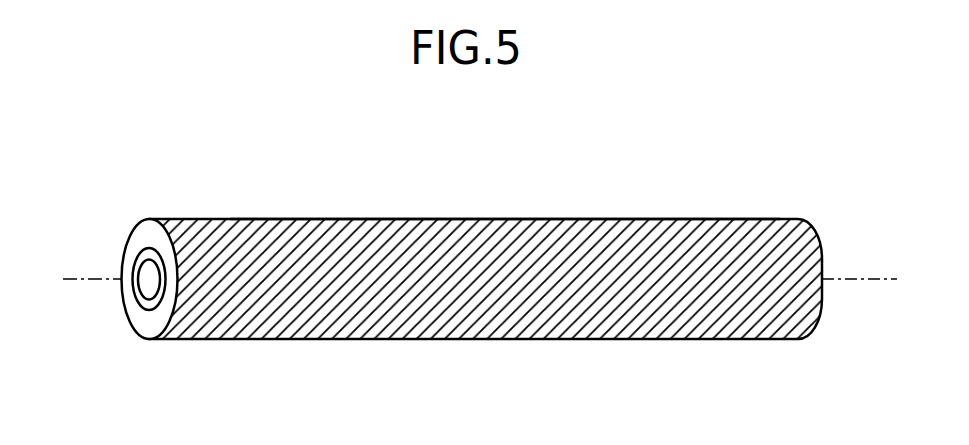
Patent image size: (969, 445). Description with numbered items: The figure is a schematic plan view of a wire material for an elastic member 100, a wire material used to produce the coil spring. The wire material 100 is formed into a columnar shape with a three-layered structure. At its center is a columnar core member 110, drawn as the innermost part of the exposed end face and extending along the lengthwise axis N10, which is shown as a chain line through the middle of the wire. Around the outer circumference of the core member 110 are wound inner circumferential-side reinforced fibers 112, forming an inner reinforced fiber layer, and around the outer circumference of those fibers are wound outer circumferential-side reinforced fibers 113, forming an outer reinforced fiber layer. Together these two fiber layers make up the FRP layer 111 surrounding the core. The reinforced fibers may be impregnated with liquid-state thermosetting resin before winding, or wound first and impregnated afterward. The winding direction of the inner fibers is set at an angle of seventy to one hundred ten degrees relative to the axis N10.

The wire material for an elastic member 100 is at (346, 164).
The core member 110 is at (150, 290).
The FRP layer 111 is at (174, 209).
The inner circumferential-side reinforced fibers 112 is at (135, 293).
The outer circumferential-side reinforced fibers 113 is at (250, 218).
The axis N10 is at (87, 278).